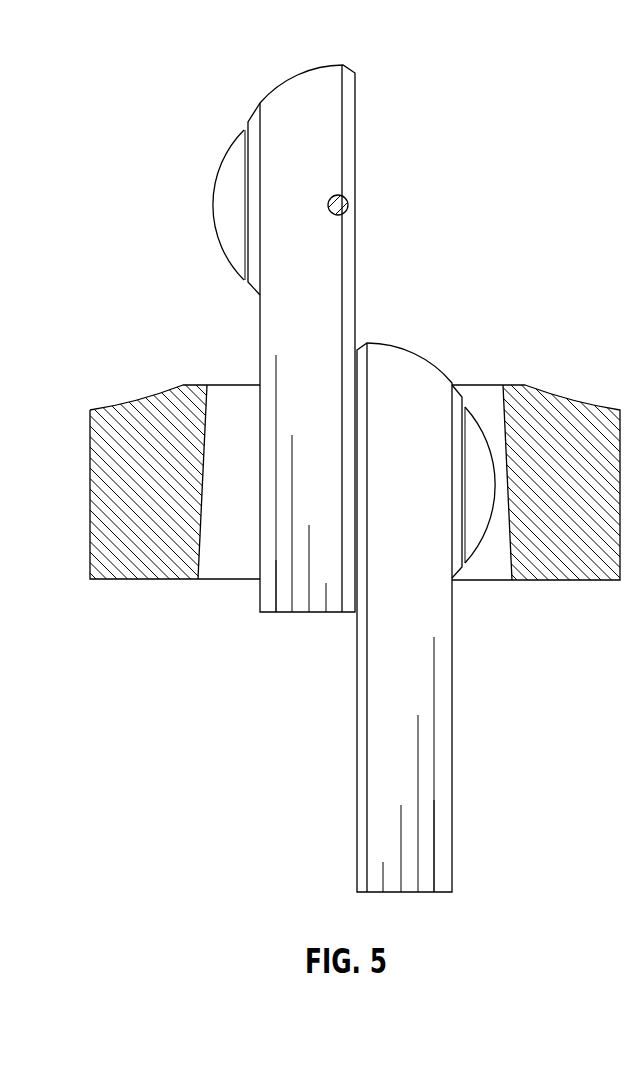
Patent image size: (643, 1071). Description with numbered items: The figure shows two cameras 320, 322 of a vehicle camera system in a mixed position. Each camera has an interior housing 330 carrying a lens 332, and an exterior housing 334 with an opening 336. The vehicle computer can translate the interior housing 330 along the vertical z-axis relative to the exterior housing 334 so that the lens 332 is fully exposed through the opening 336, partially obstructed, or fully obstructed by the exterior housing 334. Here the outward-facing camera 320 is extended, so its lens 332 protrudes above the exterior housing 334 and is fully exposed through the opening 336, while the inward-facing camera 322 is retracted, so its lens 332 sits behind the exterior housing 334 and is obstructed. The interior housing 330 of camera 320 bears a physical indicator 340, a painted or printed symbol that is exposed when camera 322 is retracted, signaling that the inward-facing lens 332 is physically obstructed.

The camera 320 is at (266, 84).
The camera 322 is at (402, 331).
The interior housing 330 is at (287, 570).
The lens 332 is at (232, 205).
The exterior housing 334 is at (125, 503).
The opening 336 is at (229, 348).
The physical indicator 340 is at (342, 207).